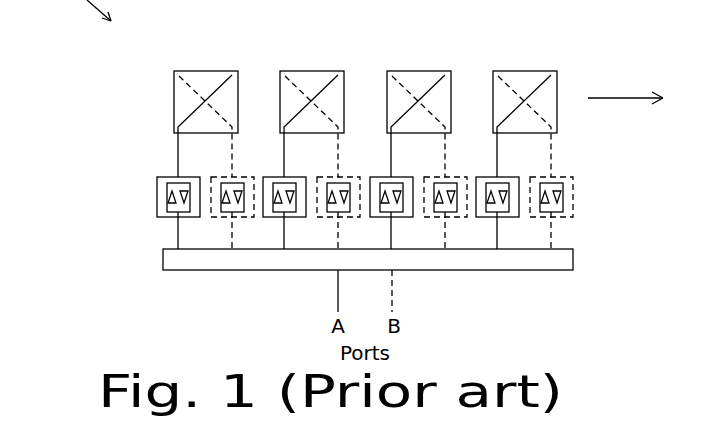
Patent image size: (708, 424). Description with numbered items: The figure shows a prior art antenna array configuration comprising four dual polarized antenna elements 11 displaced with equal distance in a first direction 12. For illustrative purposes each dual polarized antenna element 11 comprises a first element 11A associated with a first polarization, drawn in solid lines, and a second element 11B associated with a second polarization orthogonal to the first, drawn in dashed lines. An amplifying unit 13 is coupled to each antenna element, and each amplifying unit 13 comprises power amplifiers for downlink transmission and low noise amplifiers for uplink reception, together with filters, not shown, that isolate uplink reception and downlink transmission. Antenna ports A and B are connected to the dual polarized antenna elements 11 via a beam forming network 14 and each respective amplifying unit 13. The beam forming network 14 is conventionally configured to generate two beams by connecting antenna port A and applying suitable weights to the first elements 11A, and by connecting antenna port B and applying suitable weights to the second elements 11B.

The dual polarized antenna element 11 is at (188, 71).
The first element 11A is at (177, 124).
The second element 11B is at (178, 88).
The first direction 12 is at (625, 87).
The amplifying unit 13 is at (157, 190).
The beam forming network 14 is at (188, 265).